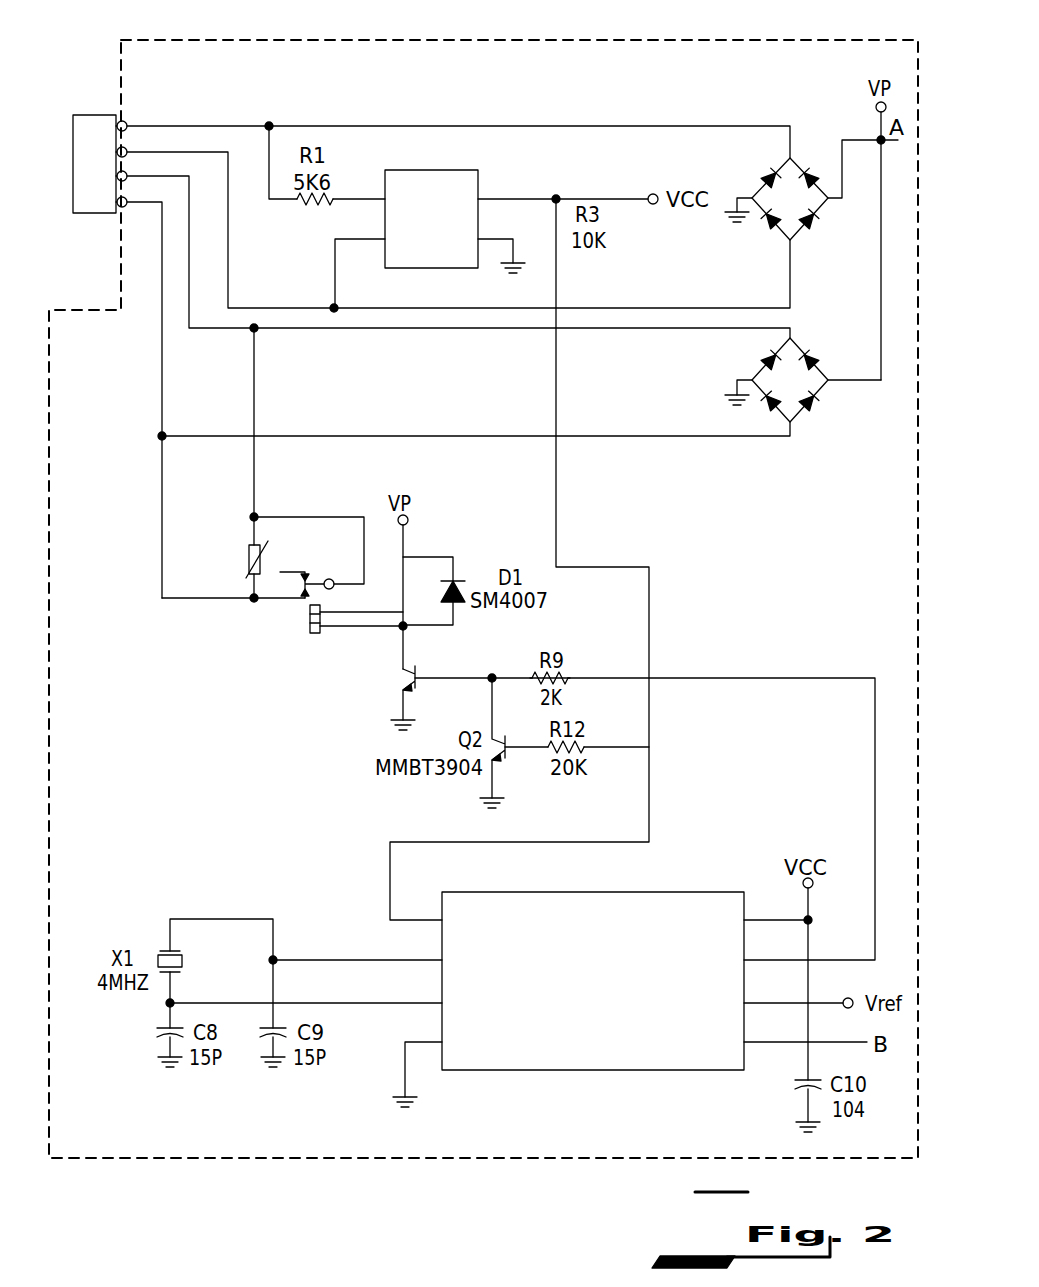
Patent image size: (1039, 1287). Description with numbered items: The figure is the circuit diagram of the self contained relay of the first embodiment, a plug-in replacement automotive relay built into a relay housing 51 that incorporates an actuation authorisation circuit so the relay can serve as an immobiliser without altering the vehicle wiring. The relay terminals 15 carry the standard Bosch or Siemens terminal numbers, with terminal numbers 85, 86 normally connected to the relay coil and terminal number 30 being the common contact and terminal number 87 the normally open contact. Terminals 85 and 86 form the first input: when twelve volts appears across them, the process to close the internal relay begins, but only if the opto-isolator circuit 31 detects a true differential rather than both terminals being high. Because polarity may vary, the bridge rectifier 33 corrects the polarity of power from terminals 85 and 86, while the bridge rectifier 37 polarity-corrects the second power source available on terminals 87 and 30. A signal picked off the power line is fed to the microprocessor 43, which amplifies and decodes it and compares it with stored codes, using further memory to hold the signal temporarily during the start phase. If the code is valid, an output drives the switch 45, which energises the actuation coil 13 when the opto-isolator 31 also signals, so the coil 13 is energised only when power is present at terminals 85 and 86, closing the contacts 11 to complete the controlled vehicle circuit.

The relay housing 51 is at (408, 40).
The relay terminals 15 is at (73, 206).
The terminal number 85 is at (458, 131).
The terminal number 86 is at (458, 221).
The terminal number 87 is at (458, 246).
The terminal number 30 is at (458, 388).
The opto-isolator circuit 31 is at (385, 201).
The bridge rectifier 33 is at (780, 233).
The bridge rectifier 37 is at (758, 370).
The contacts 11 is at (300, 582).
The actuation coil 13 is at (313, 636).
The switch 45 is at (400, 695).
The microprocessor 43 is at (565, 1070).